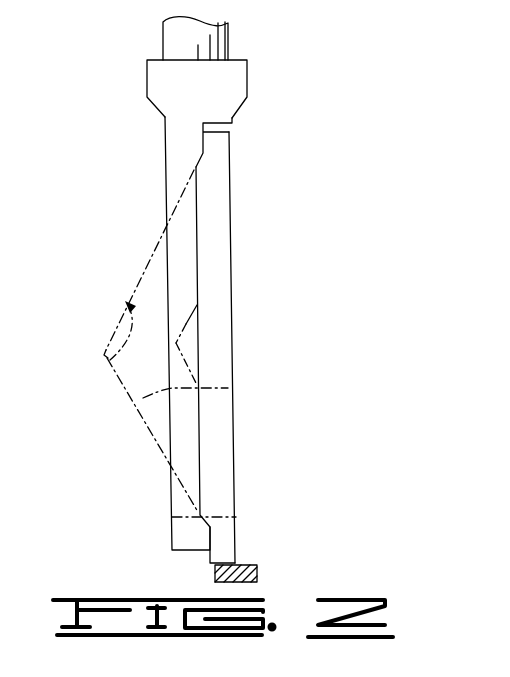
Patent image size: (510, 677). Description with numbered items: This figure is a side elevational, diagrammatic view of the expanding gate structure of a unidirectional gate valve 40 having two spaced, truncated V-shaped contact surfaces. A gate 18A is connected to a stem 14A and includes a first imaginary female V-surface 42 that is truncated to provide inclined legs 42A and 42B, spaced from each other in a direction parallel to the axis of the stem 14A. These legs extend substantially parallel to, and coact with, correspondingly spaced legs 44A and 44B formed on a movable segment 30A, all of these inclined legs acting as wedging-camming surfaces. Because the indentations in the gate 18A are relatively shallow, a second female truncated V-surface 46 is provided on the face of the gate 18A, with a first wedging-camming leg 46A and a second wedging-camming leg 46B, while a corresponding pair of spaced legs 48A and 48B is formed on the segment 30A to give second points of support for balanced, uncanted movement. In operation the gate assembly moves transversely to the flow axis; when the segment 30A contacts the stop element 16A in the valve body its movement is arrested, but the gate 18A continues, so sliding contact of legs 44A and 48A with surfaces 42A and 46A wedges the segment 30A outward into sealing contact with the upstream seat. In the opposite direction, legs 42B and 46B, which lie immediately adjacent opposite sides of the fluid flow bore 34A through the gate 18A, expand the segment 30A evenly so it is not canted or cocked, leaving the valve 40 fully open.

The gate valve 40 is at (140, 43).
The stem 14A is at (202, 33).
The gate 18A is at (212, 98).
The wedging-camming leg 44A is at (199, 164).
The inclined leg 42A is at (199, 164).
The movable segment 30A is at (216, 241).
The wedging-camming leg 48A is at (198, 308).
The first wedging-camming leg 46A is at (197, 305).
The second female truncated V-surface 46 is at (188, 339).
The second wedging-camming leg 46B is at (188, 382).
The first imaginary female V-surface 42 is at (105, 350).
The wedging-camming leg 48B is at (143, 398).
The fluid flow bore 34A is at (180, 508).
The wedging-camming leg 44B is at (210, 519).
The inclined leg 42B is at (236, 528).
The stop element 16A is at (250, 565).